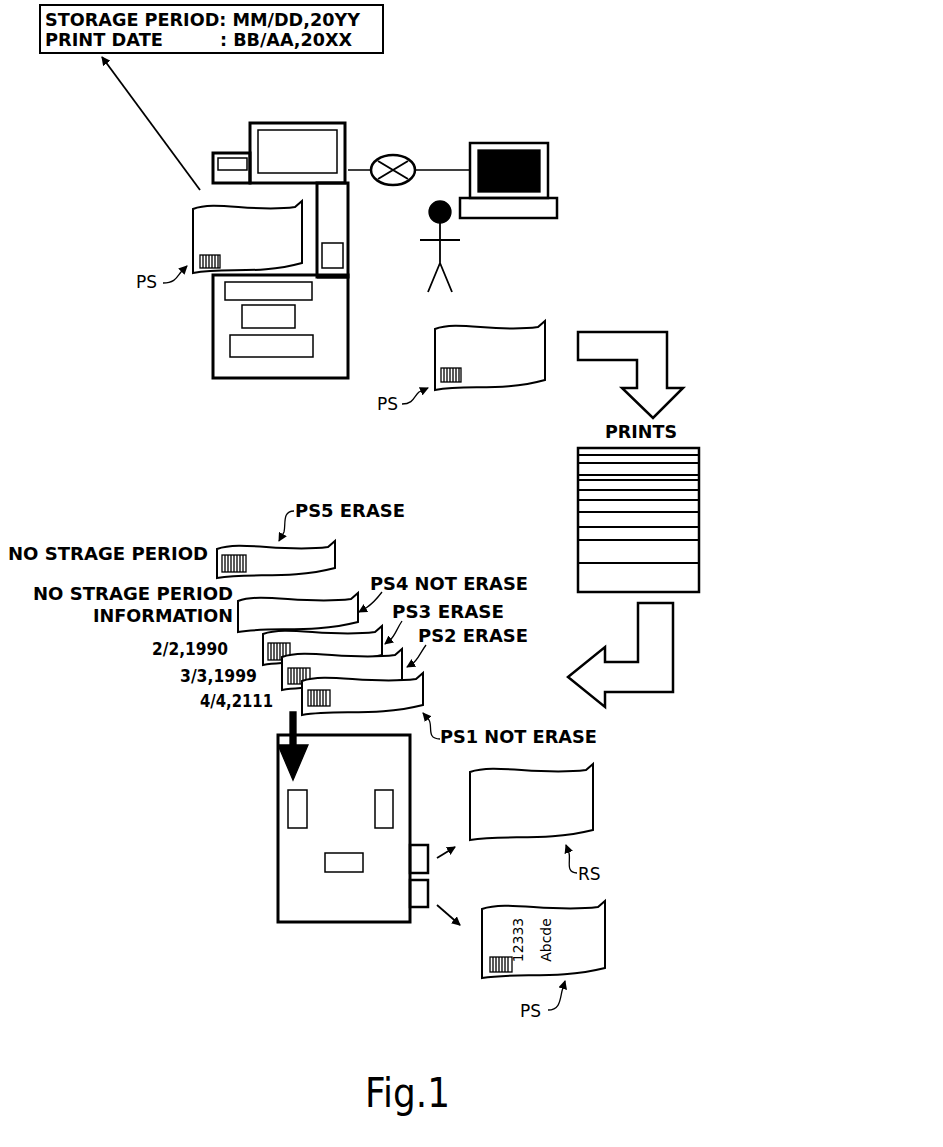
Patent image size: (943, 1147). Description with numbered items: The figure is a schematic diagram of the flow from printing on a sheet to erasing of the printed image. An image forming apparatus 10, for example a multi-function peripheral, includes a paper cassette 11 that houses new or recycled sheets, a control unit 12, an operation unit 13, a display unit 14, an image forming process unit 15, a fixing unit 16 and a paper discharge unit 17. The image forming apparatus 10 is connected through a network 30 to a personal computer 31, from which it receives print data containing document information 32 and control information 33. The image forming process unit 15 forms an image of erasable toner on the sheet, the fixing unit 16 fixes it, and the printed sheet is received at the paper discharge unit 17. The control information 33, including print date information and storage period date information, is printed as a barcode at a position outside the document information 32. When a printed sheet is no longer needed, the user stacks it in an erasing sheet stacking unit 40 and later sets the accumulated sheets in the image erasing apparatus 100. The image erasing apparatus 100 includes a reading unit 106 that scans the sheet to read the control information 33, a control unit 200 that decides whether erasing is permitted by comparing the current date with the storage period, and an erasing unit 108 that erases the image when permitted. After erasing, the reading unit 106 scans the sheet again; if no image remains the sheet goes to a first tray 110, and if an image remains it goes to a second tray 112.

The image forming apparatus 10 is at (289, 86).
The paper cassette 11 is at (287, 352).
The control unit 12 is at (283, 320).
The operation unit 13 is at (232, 163).
The display unit 14 is at (297, 122).
The image forming process unit 15 is at (292, 288).
The fixing unit 16 is at (334, 256).
The paper discharge unit 17 is at (327, 277).
The network 30 is at (393, 155).
The personal computer 31 is at (470, 143).
The document information 32 is at (224, 234).
The control information 33 is at (200, 260).
The erasing sheet stacking unit 40 is at (699, 537).
The image erasing apparatus 100 is at (278, 922).
The reading unit 106 is at (294, 812).
The erasing unit 108 is at (400, 792).
The first tray 110 is at (420, 863).
The second tray 112 is at (418, 902).
The control unit 200 is at (330, 862).